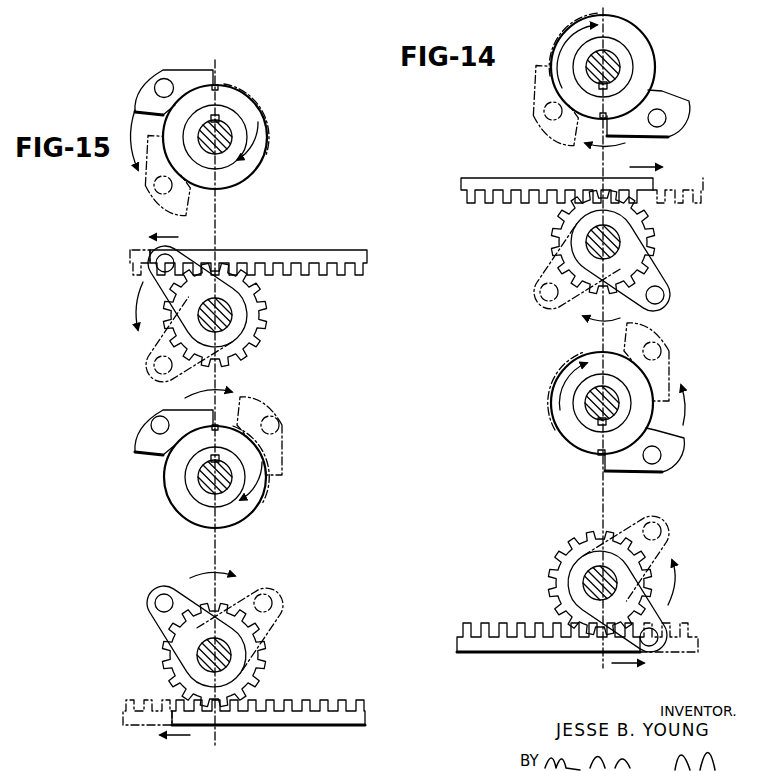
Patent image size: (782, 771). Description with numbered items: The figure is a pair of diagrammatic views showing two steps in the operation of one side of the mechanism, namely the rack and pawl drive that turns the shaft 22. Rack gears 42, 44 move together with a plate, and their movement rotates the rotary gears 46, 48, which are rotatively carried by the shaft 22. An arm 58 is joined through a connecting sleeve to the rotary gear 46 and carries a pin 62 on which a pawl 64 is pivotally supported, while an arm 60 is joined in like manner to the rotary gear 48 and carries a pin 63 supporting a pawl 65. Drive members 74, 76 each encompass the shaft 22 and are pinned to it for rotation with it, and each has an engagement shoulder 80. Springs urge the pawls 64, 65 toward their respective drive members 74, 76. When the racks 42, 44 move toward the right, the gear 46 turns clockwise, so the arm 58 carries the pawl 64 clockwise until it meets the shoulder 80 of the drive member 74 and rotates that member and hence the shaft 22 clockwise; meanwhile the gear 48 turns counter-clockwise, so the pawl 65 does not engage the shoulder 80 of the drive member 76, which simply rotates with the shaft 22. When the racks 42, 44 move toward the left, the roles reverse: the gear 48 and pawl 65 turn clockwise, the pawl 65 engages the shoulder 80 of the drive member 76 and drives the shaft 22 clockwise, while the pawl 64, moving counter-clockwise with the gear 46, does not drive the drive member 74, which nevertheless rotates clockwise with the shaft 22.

In FIG. 15, the shaft 22 is at (227, 142).
In FIG. 14, the shaft 22 is at (606, 52).
In FIG. 15, the rack gear 42 is at (333, 250).
In FIG. 14, the rack gear 42 is at (463, 178).
In FIG. 15, the rack gear 44 is at (120, 706).
In FIG. 14, the rack gear 44 is at (472, 625).
In FIG. 15, the rotary gear 46 is at (262, 334).
In FIG. 14, the rotary gear 46 is at (641, 230).
In FIG. 15, the rotary gear 48 is at (165, 668).
In FIG. 14, the rotary gear 48 is at (568, 545).
In FIG. 15, the arm 58 is at (200, 263).
In FIG. 14, the arm 58 is at (548, 268).
In FIG. 15, the arm 60 is at (158, 622).
In FIG. 14, the arm 60 is at (670, 536).
In FIG. 15, the pin 62 is at (165, 80).
In FIG. 14, the pin 62 is at (543, 115).
In FIG. 15, the pin 63 is at (150, 426).
In FIG. 14, the pin 63 is at (672, 350).
In FIG. 15, the pawl 64 is at (196, 72).
In FIG. 14, the pawl 64 is at (688, 95).
In FIG. 15, the pawl 65 is at (140, 454).
In FIG. 14, the pawl 65 is at (672, 430).
In FIG. 15, the drive member 74 is at (252, 110).
In FIG. 14, the drive member 74 is at (640, 44).
In FIG. 15, the drive member 76 is at (200, 515).
In FIG. 14, the drive member 76 is at (566, 366).
In FIG. 15, the engagement shoulder 80 is at (219, 86).
In FIG. 14, the engagement shoulder 80 is at (555, 60).